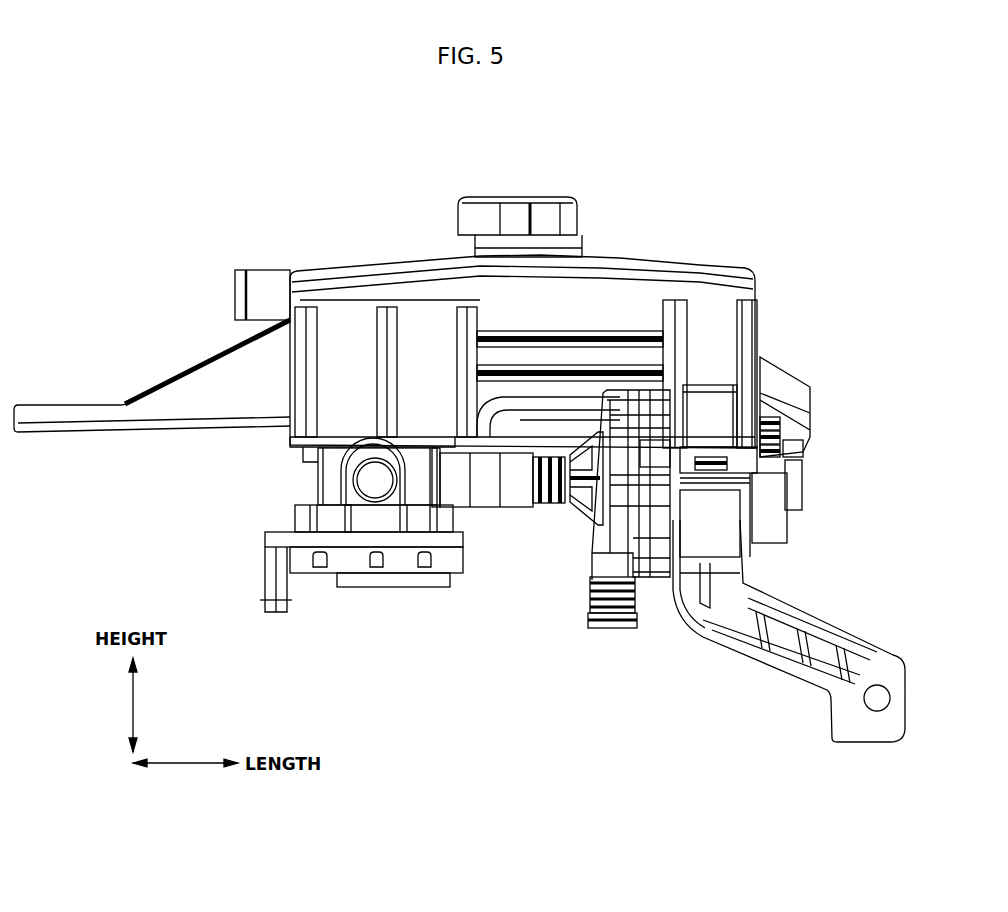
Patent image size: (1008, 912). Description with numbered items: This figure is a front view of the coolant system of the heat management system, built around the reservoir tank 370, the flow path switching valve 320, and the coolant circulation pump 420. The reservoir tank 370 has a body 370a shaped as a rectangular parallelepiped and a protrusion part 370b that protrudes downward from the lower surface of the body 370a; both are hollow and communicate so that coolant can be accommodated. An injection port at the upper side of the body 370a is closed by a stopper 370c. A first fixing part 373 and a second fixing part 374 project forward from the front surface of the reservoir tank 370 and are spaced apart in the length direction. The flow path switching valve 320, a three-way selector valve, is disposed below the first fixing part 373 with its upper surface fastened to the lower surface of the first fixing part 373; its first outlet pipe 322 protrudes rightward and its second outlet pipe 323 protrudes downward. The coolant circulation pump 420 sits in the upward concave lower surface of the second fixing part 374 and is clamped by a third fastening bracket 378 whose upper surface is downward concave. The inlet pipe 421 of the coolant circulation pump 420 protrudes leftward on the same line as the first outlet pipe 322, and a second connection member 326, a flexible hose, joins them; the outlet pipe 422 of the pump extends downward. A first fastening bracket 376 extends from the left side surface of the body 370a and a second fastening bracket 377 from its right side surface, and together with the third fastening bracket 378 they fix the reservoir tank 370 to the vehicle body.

The reservoir tank 370 is at (410, 250).
The body 370a is at (340, 300).
The protrusion part 370b is at (300, 455).
The stopper 370c is at (520, 205).
The first fixing part 373 is at (290, 432).
The second fixing part 374 is at (705, 440).
The first fastening bracket 376 is at (82, 412).
The second fastening bracket 377 is at (795, 375).
The third fastening bracket 378 is at (765, 690).
The coolant circulation pump 420 is at (618, 375).
The inlet pipe 421 is at (592, 583).
The outlet pipe 422 is at (606, 630).
The flow path switching valve 320 is at (400, 580).
The first outlet pipe 322 is at (475, 560).
The second outlet pipe 323 is at (345, 585).
The second connection member 326 is at (545, 550).